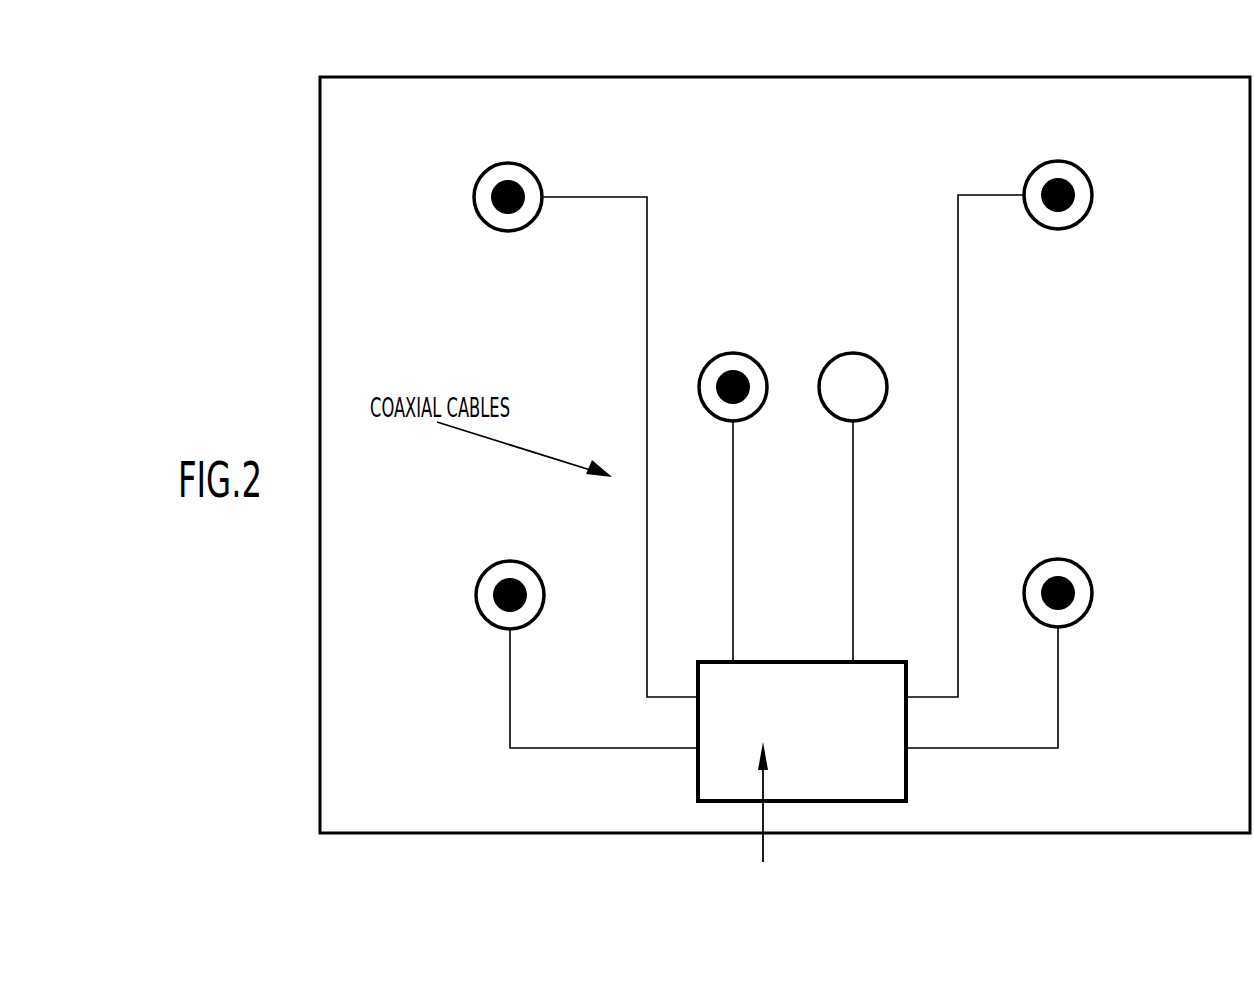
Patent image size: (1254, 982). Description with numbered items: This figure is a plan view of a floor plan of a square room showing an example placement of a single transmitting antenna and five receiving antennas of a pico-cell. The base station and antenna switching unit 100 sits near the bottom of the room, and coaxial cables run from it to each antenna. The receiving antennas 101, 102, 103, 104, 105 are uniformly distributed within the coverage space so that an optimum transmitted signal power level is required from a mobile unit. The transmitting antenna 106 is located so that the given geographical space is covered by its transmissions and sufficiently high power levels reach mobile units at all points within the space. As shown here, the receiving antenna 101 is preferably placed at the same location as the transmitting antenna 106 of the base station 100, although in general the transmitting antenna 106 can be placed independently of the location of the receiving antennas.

The base station 100 is at (828, 714).
The receiving antenna 101 is at (699, 382).
The receiving antenna 102 is at (476, 197).
The receiving antenna 103 is at (1091, 195).
The receiving antenna 104 is at (1091, 585).
The receiving antenna 105 is at (477, 595).
The transmitting antenna 106 is at (887, 378).